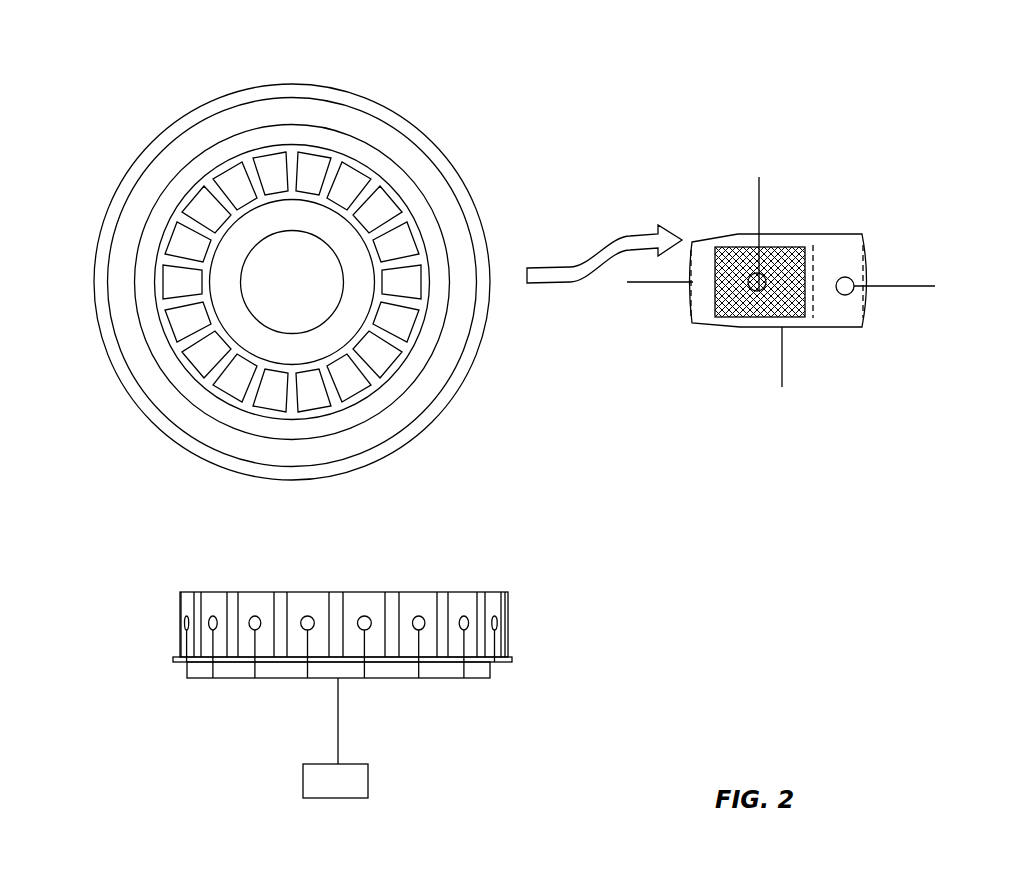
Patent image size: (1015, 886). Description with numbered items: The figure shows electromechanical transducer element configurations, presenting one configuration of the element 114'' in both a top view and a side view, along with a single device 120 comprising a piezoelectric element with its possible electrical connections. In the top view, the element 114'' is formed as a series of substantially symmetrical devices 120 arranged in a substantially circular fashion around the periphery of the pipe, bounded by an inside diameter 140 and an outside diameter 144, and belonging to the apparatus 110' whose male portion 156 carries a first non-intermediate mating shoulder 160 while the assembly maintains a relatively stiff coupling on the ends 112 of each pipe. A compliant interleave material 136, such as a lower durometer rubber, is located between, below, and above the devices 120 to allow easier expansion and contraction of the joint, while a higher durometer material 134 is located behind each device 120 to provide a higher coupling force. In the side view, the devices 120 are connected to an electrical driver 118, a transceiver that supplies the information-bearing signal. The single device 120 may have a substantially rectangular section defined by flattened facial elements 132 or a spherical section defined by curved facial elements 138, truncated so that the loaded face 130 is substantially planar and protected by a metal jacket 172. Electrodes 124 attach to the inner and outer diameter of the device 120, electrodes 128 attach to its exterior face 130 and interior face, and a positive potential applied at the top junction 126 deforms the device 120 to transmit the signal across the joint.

The apparatus 110' is at (553, 349).
The ends of each pipe 112 is at (422, 348).
The electromechanical transducer element 114'' is at (588, 366).
The electrical driver 118 is at (327, 763).
The device 120 is at (358, 350).
The electrodes 124 is at (647, 284).
The top junction 126 is at (846, 295).
The electrodes 128 is at (762, 193).
The loaded face 130 is at (405, 286).
The flattened facial elements 132 is at (687, 311).
The higher durometer material 134 is at (512, 660).
The compliant interleave material 136 is at (292, 408).
The curved facial elements 138 is at (870, 264).
The inside diameter 140 is at (322, 203).
The outside diameter 144 is at (287, 142).
The male portion 156 is at (425, 388).
The first non-intermediate mating shoulder 160 is at (413, 428).
The metal jacket 172 is at (733, 303).